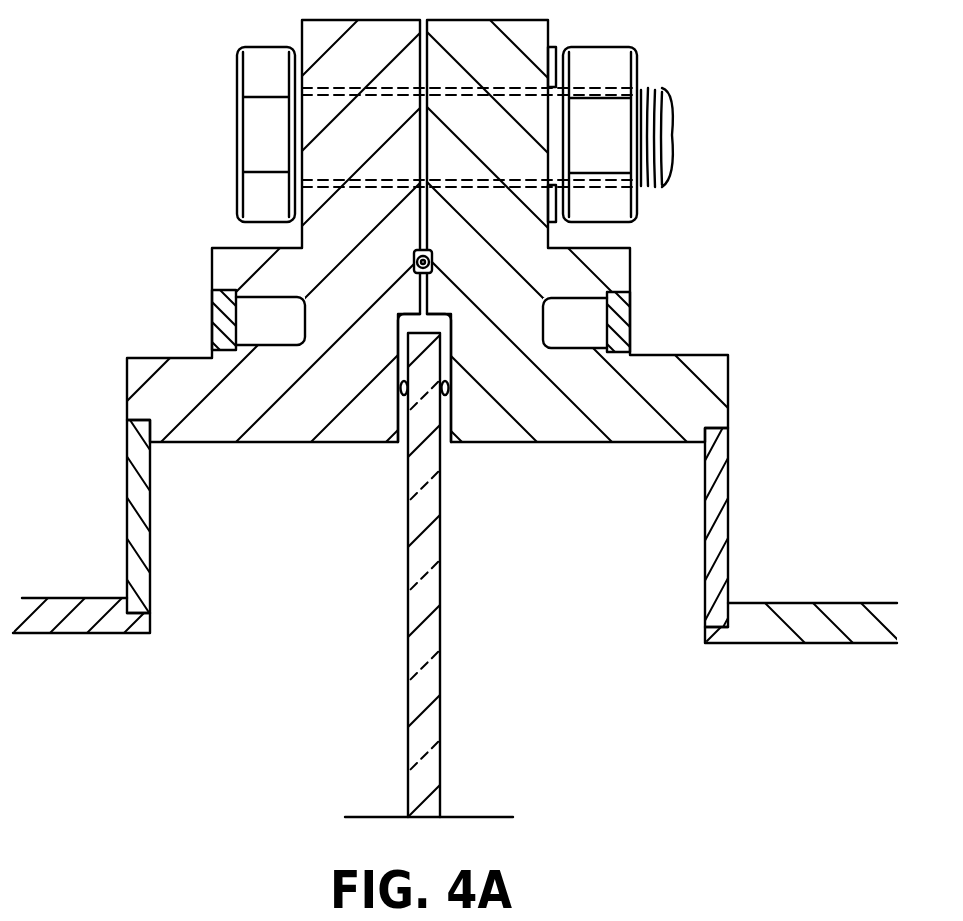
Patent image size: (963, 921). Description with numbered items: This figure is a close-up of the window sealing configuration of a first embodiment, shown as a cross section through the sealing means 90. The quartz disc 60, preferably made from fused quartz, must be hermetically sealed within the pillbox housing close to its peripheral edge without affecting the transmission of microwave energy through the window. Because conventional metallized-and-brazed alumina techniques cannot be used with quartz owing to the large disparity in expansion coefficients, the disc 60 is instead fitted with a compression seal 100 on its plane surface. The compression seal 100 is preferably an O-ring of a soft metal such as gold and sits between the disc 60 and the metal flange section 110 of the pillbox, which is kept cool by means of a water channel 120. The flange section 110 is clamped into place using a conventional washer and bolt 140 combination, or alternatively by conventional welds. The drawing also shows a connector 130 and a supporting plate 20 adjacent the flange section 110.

The bolt 140 is at (672, 180).
The electrical connector 130 is at (433, 258).
The water channel 120 is at (580, 323).
The flange section 110 is at (728, 408).
The compression seal 100 is at (404, 396).
The sealing means 90 is at (82, 322).
The base plate 20 is at (758, 603).
The quartz disc 60 is at (440, 692).